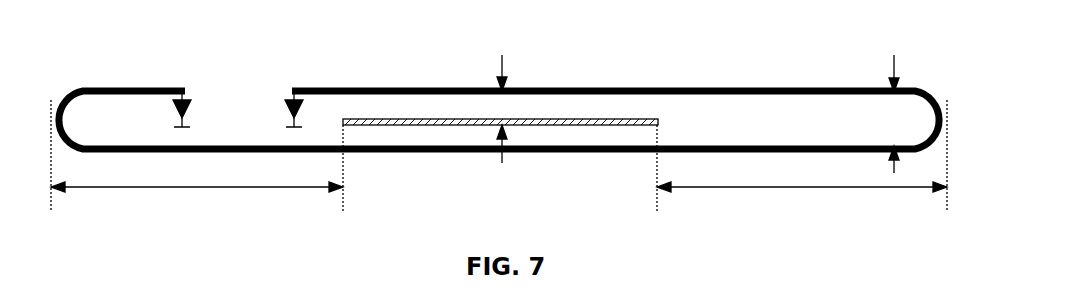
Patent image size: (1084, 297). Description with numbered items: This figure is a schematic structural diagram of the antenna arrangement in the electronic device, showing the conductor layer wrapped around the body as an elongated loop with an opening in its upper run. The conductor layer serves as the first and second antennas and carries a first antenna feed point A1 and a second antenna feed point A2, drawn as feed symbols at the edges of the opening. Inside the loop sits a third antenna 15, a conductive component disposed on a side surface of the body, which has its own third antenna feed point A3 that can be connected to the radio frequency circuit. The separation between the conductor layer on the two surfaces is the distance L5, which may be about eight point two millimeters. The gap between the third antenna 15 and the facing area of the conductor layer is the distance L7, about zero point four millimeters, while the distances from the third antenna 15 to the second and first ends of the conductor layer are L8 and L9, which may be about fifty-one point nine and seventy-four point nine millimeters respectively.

The first antenna feed point A1 is at (306, 98).
The second antenna feed point A2 is at (173, 98).
The third antenna feed point A3 is at (476, 118).
The third antenna 15 is at (657, 125).
The distance between the conductor layer on both sides of the first surface and the L5 is at (891, 114).
The distance between the third antenna and the conductor layer area facing the secon L7 is at (519, 109).
The distance between the third antenna and the second end of the conductor layer L8 is at (197, 207).
The distance between the third antenna and the first end of the conductor layer L9 is at (802, 198).